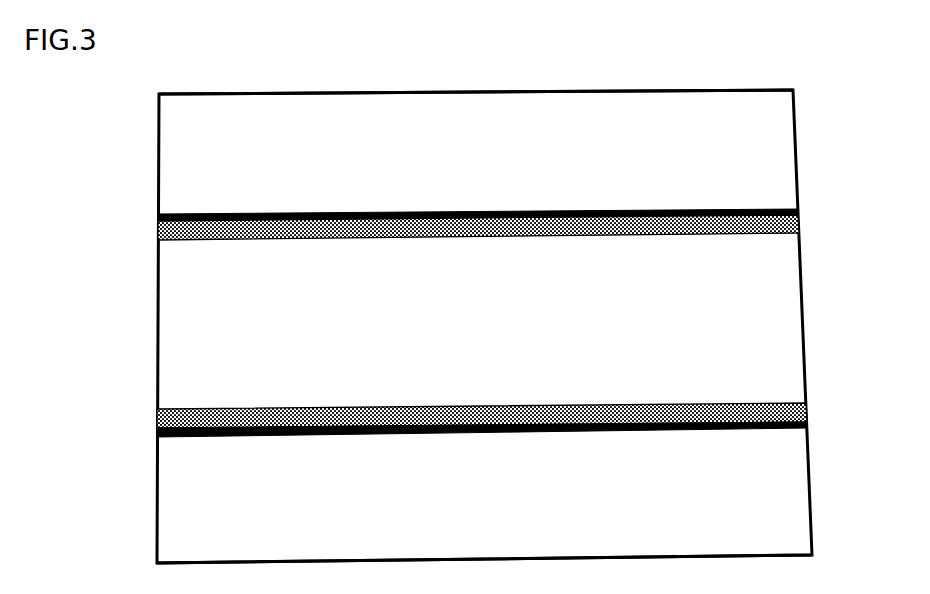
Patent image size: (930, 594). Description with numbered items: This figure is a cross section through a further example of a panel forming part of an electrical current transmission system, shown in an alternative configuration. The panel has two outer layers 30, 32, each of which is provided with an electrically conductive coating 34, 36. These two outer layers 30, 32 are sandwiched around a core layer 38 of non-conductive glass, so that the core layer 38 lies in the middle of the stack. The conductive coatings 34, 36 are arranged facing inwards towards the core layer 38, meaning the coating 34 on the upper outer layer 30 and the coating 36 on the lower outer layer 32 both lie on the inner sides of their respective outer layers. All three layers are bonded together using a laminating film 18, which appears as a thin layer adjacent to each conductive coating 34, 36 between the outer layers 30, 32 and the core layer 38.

The outer layer 30 is at (745, 153).
The electrically conductive coating 34 is at (797, 213).
The laminating film 18 is at (797, 225).
The core layer 38 is at (765, 318).
The electrically conductive coating 36 is at (800, 425).
The outer layer 32 is at (780, 508).